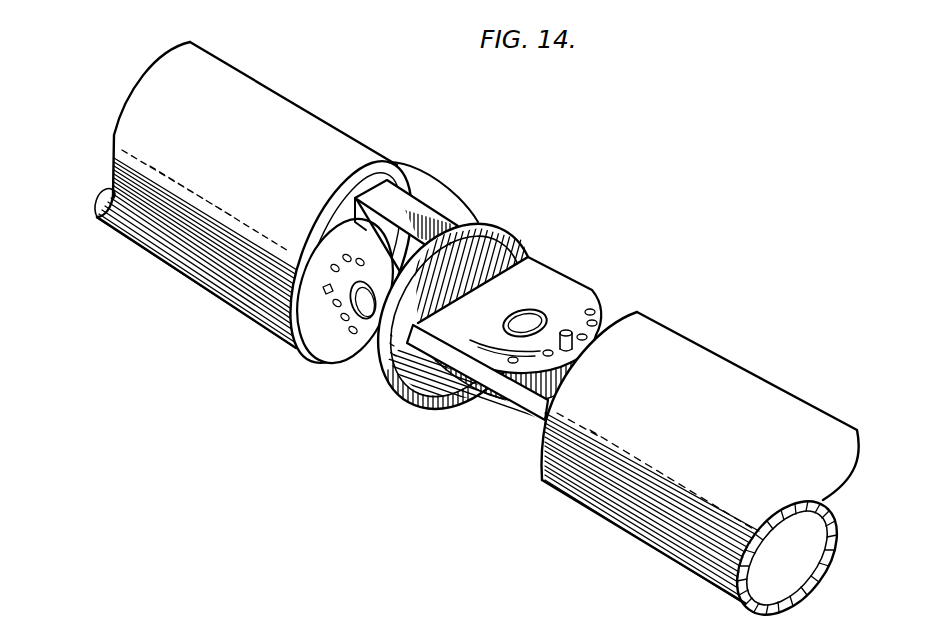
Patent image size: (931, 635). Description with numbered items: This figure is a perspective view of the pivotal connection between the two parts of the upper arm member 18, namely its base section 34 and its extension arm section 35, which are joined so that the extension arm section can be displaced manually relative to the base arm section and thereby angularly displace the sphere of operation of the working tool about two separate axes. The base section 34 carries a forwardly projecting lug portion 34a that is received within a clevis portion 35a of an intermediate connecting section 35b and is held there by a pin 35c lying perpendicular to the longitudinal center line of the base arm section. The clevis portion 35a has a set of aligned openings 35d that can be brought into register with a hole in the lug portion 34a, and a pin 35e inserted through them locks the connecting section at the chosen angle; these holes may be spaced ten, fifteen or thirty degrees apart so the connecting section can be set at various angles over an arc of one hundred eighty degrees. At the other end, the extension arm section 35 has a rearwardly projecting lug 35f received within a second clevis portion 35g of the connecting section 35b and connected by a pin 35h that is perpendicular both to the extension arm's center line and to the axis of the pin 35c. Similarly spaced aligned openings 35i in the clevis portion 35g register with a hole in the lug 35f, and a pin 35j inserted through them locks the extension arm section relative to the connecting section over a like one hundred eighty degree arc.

The upper arm member 18 is at (678, 323).
The base section 34 is at (322, 134).
The lug portion 34a is at (410, 208).
The extension arm section 35 is at (745, 388).
The clevis portion 35a is at (327, 259).
The connecting section 35b is at (490, 228).
The pin 35c is at (368, 344).
The aligned openings 35d is at (350, 330).
The pin 35e is at (326, 292).
The lug 35f is at (516, 400).
The clevis portion 35g is at (532, 283).
The pin 35h is at (520, 312).
The aligned openings 35i is at (510, 332).
The pin 35j is at (577, 352).